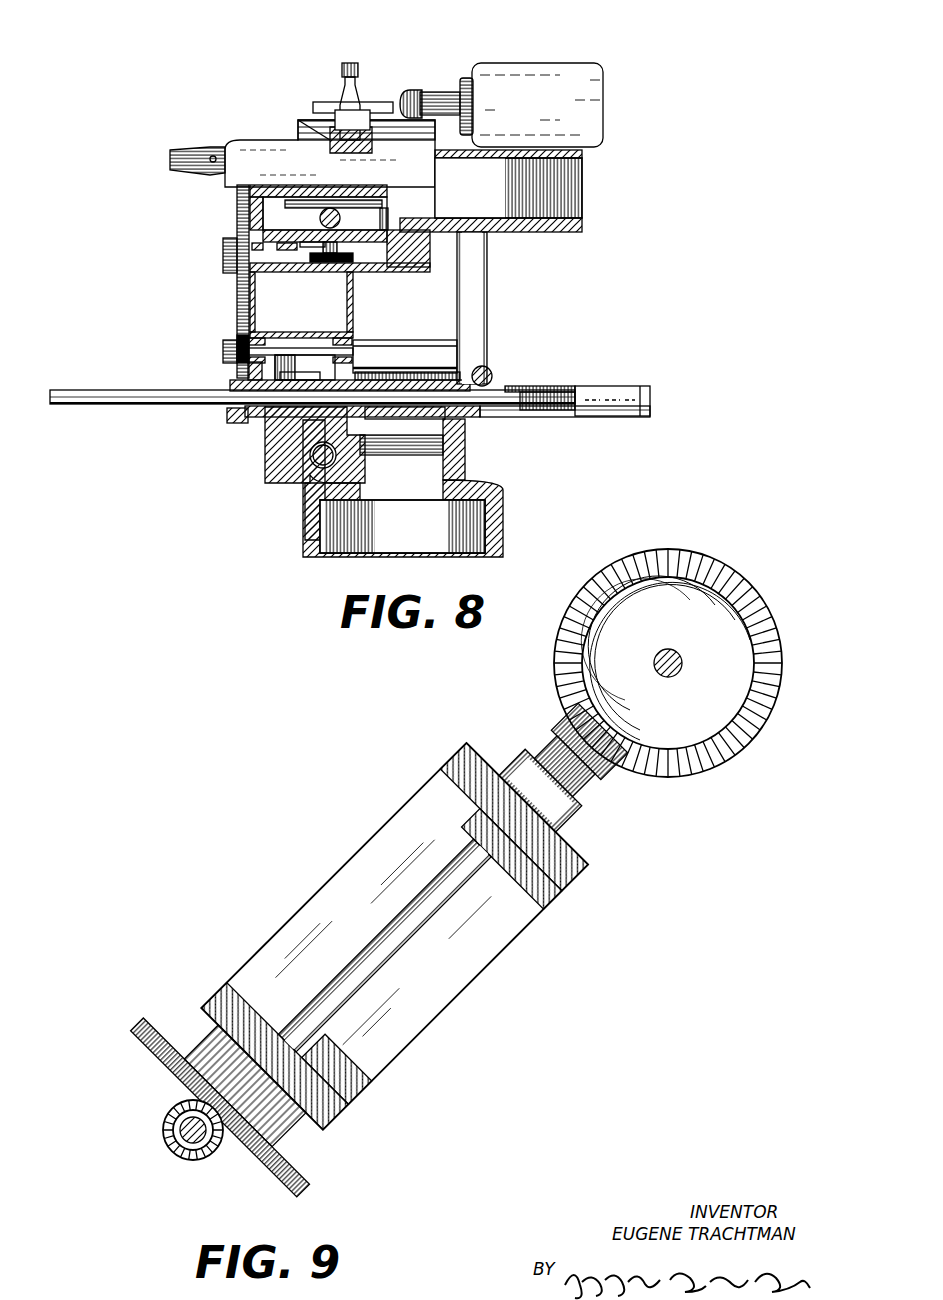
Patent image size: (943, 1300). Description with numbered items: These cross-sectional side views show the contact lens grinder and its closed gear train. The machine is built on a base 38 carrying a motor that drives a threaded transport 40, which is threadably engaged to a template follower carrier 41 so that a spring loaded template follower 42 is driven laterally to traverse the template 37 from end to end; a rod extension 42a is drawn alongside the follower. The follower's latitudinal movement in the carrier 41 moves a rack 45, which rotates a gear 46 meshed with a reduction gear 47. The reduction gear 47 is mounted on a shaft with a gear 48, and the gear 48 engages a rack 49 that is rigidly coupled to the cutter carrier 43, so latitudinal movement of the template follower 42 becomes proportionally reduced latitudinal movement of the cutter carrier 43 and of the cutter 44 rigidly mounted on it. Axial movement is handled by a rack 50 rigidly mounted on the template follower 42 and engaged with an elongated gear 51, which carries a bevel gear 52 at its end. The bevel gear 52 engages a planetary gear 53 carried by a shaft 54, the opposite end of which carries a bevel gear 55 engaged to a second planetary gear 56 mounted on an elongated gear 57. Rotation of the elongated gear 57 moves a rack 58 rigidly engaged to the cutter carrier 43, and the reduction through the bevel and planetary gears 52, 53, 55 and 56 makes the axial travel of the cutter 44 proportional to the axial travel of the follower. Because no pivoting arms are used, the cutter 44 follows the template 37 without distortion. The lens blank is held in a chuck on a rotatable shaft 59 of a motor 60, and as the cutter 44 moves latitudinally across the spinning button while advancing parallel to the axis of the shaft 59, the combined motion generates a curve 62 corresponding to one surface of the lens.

In FIG. 8, the template 37 is at (604, 394).
In FIG. 8, the base 38 is at (303, 552).
In FIG. 8, the threaded transport 40 is at (332, 462).
In FIG. 8, the template follower carrier 41 is at (240, 424).
In FIG. 8, the template follower 42 is at (160, 392).
In FIG. 8, the rod extension 42a is at (562, 420).
In FIG. 8, the cutter carrier 43 is at (278, 152).
In FIG. 8, the cutter 44 is at (393, 108).
In FIG. 8, the rack 45 is at (240, 372).
In FIG. 8, the gear 46 is at (236, 345).
In FIG. 8, the reduction gear 47 is at (238, 218).
In FIG. 8, the gear 48 is at (356, 268).
In FIG. 8, the rack 49 is at (333, 262).
In FIG. 8, the rack 50 is at (512, 392).
In FIG. 8, the elongated gear 51 is at (494, 370).
In FIG. 9, the bevel gear 52 is at (168, 1118).
In FIG. 9, the planetary gear 53 is at (232, 1086).
In FIG. 9, the shaft 54 is at (394, 936).
In FIG. 9, the bevel gear 55 is at (552, 753).
In FIG. 9, the second planetary gear 56 is at (710, 566).
In FIG. 8, the elongated gear 57 is at (338, 222).
In FIG. 8, the rack 58 is at (388, 213).
In FIG. 8, the rotatable shaft 59 is at (432, 96).
In FIG. 8, the motor 60 is at (540, 107).
In FIG. 8, the curve 62 is at (410, 90).